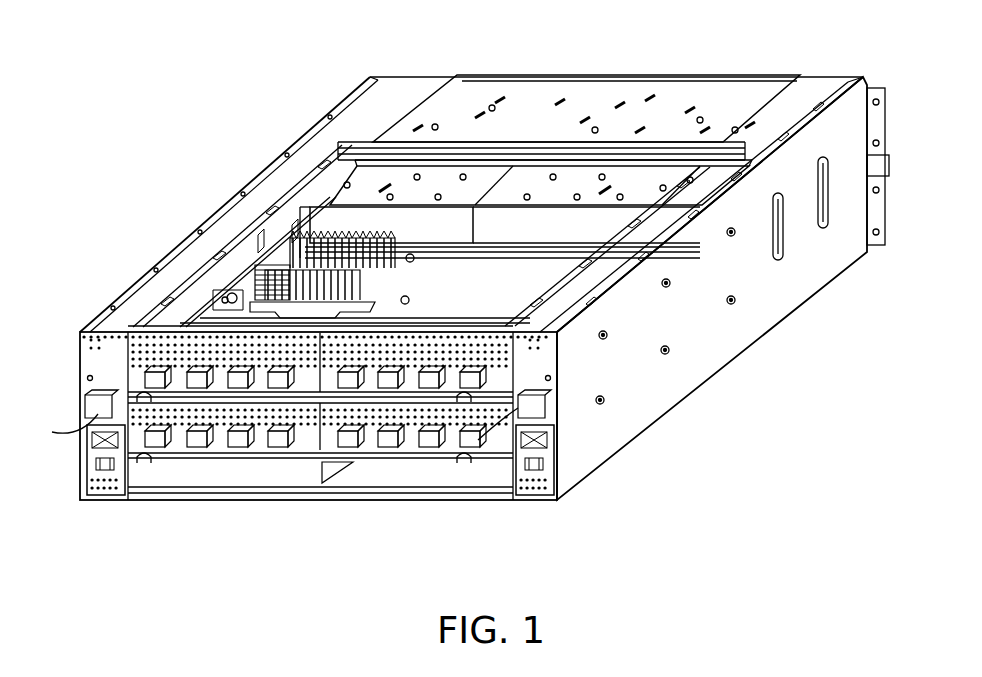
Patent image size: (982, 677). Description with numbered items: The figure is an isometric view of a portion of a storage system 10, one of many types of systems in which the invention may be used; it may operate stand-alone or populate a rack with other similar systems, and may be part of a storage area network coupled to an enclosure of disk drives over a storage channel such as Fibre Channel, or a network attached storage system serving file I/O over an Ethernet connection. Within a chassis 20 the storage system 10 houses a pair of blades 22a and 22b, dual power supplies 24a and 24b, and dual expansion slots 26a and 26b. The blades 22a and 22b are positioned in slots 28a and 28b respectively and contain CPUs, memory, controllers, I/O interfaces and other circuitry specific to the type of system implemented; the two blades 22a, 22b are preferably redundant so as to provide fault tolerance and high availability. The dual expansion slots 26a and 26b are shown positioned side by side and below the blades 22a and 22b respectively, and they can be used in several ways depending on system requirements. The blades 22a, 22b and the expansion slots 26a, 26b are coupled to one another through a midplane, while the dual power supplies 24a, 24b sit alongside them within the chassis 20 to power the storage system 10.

The storage system 10 is at (314, 34).
The chassis 20 is at (713, 346).
The blade 22a is at (436, 276).
The blade 22b is at (312, 435).
The power supply 24a is at (291, 185).
The power supply 24b is at (738, 160).
The expansion slot 26a is at (263, 470).
The expansion slot 26b is at (423, 470).
The slot 28a is at (133, 362).
The slot 28b is at (160, 410).